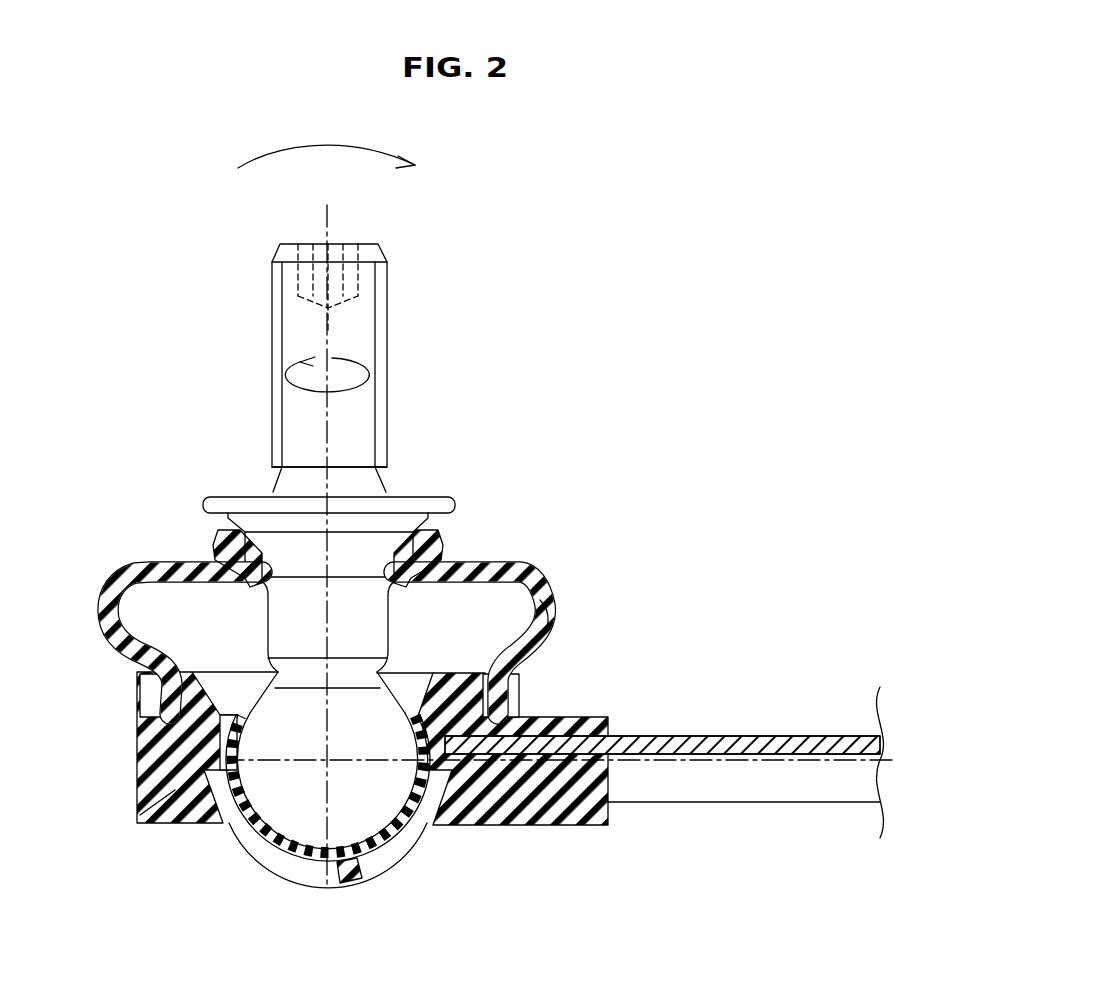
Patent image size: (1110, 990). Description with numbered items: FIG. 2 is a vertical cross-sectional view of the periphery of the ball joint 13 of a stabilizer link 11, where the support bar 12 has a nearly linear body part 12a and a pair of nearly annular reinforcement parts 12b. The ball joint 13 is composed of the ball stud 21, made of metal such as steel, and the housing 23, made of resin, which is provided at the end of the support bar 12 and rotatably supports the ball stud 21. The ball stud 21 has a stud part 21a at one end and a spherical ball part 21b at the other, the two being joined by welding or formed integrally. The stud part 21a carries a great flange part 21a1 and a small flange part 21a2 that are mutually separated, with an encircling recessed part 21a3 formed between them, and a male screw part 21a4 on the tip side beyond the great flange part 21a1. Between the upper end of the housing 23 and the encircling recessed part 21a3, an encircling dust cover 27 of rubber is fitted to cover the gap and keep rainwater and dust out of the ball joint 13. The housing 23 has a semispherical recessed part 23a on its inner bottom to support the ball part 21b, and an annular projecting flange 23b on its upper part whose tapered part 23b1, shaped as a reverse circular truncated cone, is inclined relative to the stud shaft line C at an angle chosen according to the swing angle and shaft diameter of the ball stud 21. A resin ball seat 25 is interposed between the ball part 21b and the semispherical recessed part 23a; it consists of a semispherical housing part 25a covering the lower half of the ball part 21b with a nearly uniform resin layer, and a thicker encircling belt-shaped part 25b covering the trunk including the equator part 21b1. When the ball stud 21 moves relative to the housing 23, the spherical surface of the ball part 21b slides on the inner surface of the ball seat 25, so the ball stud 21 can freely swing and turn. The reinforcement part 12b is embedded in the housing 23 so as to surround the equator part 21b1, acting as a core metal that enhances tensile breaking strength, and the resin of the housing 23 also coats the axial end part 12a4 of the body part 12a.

The ball joint 11 is at (660, 293).
The support bar 12 is at (511, 753).
The body part 12a is at (765, 760).
The axial end part 12a4 is at (565, 745).
The reinforcement part 12b is at (185, 780).
The ball joint 13 is at (90, 805).
The ball stud 21 is at (293, 604).
The stud part 21a is at (293, 464).
The great flange part 21a1 is at (455, 500).
The small flange part 21a2 is at (262, 570).
The encircling recessed part 21a3 is at (440, 535).
The male screw part 21a4 is at (272, 340).
The ball part 21b is at (295, 790).
The equator part 21b1 is at (372, 835).
The housing 23 is at (371, 773).
The semispherical recessed part 23a is at (365, 850).
The projecting flange 23b is at (500, 700).
The tapered part 23b1 is at (460, 690).
The ball seat 25 is at (367, 747).
The housing part 25a is at (335, 860).
The encircling belt-shaped part 25b is at (415, 645).
The dust cover 27 is at (545, 615).
The stud shaft line C is at (335, 215).